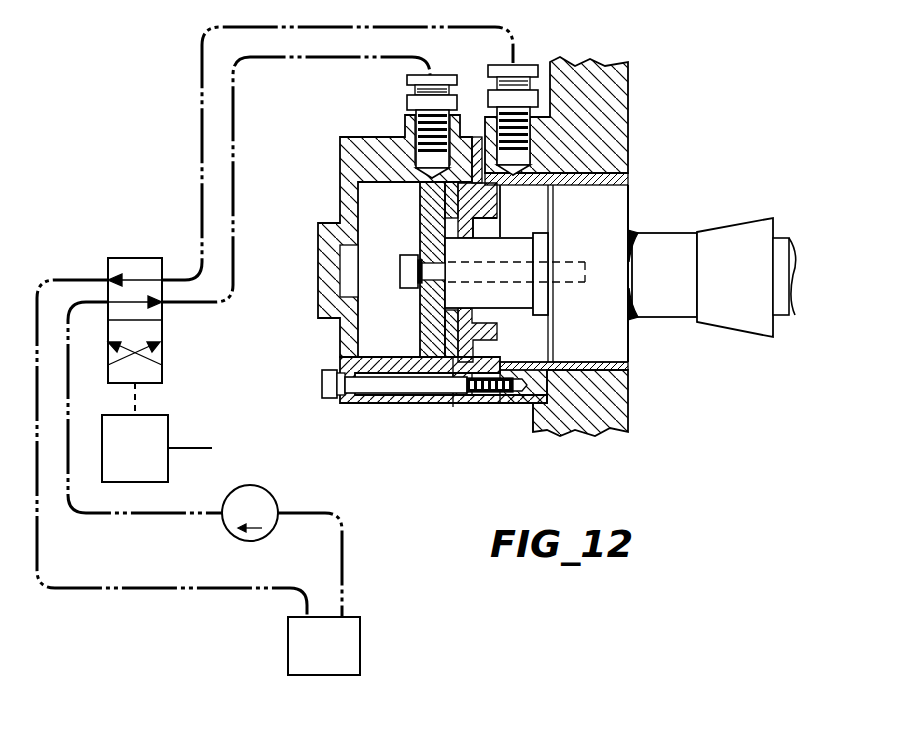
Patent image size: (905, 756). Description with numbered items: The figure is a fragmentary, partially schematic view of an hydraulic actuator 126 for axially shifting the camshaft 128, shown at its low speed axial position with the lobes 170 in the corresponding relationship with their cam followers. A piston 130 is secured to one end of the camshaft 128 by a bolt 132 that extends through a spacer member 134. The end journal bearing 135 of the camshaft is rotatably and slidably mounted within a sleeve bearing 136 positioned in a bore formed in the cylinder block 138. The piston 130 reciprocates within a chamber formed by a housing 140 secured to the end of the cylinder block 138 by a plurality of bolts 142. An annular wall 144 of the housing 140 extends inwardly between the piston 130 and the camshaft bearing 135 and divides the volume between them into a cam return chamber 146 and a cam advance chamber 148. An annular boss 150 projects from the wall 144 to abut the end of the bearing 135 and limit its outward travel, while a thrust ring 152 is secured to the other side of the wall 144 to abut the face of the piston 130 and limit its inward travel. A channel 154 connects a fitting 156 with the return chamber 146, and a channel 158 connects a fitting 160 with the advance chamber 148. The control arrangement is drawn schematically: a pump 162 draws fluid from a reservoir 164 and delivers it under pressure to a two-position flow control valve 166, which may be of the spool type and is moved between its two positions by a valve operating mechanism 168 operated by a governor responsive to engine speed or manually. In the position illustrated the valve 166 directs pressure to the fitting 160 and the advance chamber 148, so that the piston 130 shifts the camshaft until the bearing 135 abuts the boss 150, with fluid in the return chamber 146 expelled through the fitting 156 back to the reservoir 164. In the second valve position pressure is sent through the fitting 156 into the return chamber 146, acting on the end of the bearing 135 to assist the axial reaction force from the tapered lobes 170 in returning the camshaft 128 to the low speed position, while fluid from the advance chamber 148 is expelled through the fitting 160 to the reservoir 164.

The hydraulic actuator 126 is at (150, 150).
The camshaft 128 is at (660, 221).
The piston 130 is at (423, 301).
The bolt 132 is at (400, 268).
The spacer member 134 is at (513, 296).
The end journal bearing 135 is at (617, 203).
The sleeve bearing 136 is at (600, 358).
The cylinder block 138 is at (628, 95).
The housing 140 is at (380, 130).
The bolts 142 is at (324, 377).
The annular wall 144 is at (470, 229).
The cam return chamber 146 is at (540, 348).
The cam advance chamber 148 is at (450, 314).
The annular boss 150 is at (497, 340).
The thrust ring 152 is at (453, 405).
The channel 154 is at (503, 170).
The fitting 156 is at (485, 100).
The channel 158 is at (443, 180).
The fitting 160 is at (410, 100).
The pump 162 is at (290, 470).
The reservoir 164 is at (360, 620).
The flow control valve 166 is at (127, 258).
The valve operating mechanism 168 is at (168, 415).
The lobes 170 is at (742, 230).